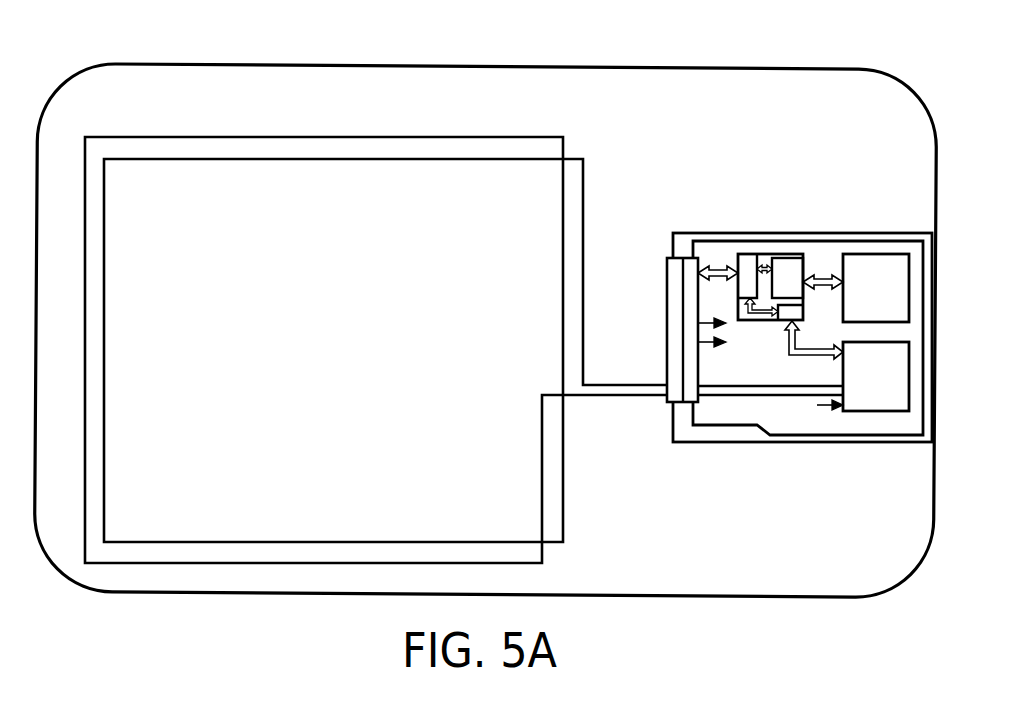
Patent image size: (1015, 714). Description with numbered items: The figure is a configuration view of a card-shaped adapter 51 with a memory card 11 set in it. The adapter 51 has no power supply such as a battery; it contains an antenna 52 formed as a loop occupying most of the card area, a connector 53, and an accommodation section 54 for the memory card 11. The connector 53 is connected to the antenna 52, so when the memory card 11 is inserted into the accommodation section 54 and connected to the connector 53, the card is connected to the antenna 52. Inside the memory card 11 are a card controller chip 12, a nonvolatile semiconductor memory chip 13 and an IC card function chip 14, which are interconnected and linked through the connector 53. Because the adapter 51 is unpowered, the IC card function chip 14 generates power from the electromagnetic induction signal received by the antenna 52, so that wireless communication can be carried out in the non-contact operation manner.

The card-shaped adapter 51 is at (930, 545).
The antenna 52 is at (265, 146).
The connector 53 is at (665, 285).
The accommodation section 54 is at (733, 447).
The memory card 11 is at (824, 252).
The card controller chip 12 is at (763, 255).
The nonvolatile semiconductor memory chip 13 is at (899, 284).
The IC card function chip 14 is at (899, 375).